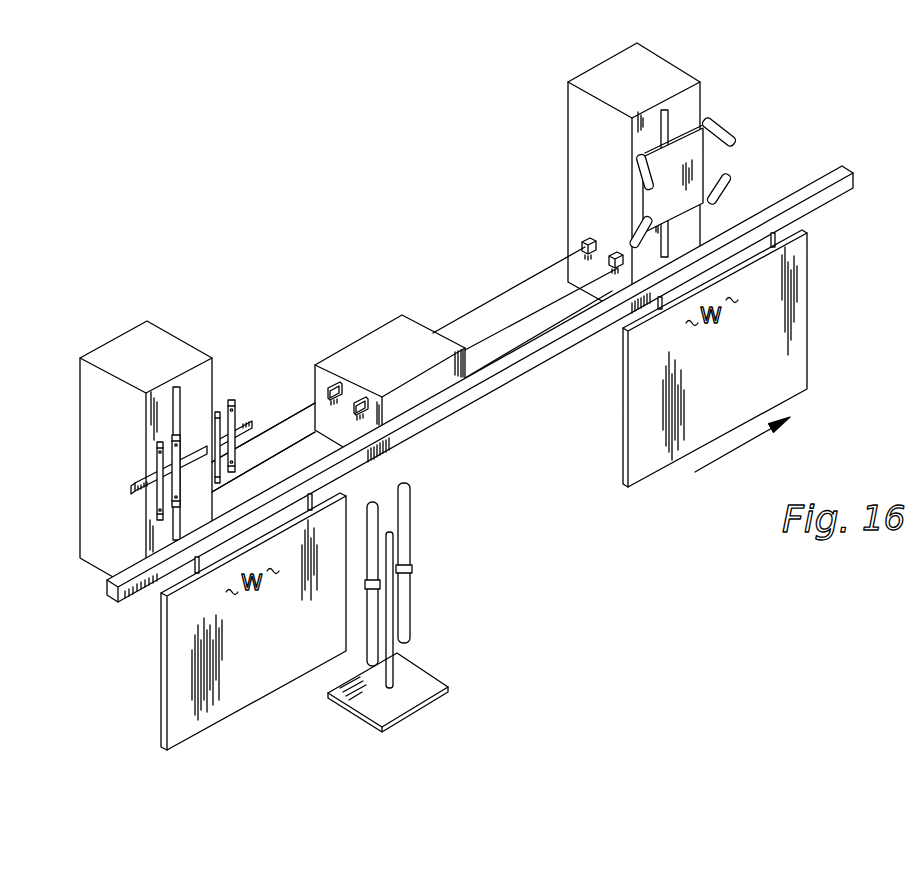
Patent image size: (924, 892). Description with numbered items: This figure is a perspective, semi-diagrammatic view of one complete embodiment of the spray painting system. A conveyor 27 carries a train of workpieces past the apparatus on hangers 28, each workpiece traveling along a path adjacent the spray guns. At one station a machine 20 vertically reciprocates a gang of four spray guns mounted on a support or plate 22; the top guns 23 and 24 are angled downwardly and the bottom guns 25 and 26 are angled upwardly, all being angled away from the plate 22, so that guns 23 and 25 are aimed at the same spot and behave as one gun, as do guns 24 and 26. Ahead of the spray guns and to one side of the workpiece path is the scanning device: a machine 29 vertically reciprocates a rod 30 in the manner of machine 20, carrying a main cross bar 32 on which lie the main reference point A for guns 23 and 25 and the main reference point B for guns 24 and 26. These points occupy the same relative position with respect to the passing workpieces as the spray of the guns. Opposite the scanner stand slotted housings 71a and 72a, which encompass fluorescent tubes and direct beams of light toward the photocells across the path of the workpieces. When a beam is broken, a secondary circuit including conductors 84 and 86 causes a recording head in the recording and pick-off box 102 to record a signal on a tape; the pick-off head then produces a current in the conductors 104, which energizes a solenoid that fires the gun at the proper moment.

The machine 20 is at (643, 62).
The support 22 is at (698, 154).
The top gun 23 is at (638, 170).
The top gun 24 is at (728, 136).
The bottom gun 25 is at (634, 228).
The bottom gun 26 is at (727, 182).
The conveyor 27 is at (851, 185).
The hanger 28 is at (792, 234).
The machine 29 is at (146, 340).
The rod 30 is at (182, 448).
The main cross bar 32 is at (190, 466).
The slotted housing 71a is at (368, 600).
The slotted housing 72a is at (410, 550).
The conductor 84 is at (280, 418).
The conductor 86 is at (270, 458).
The recording and pick-off box 102 is at (380, 338).
The conductors 104 is at (490, 328).
The main reference point A is at (170, 474).
The main reference point B is at (228, 410).